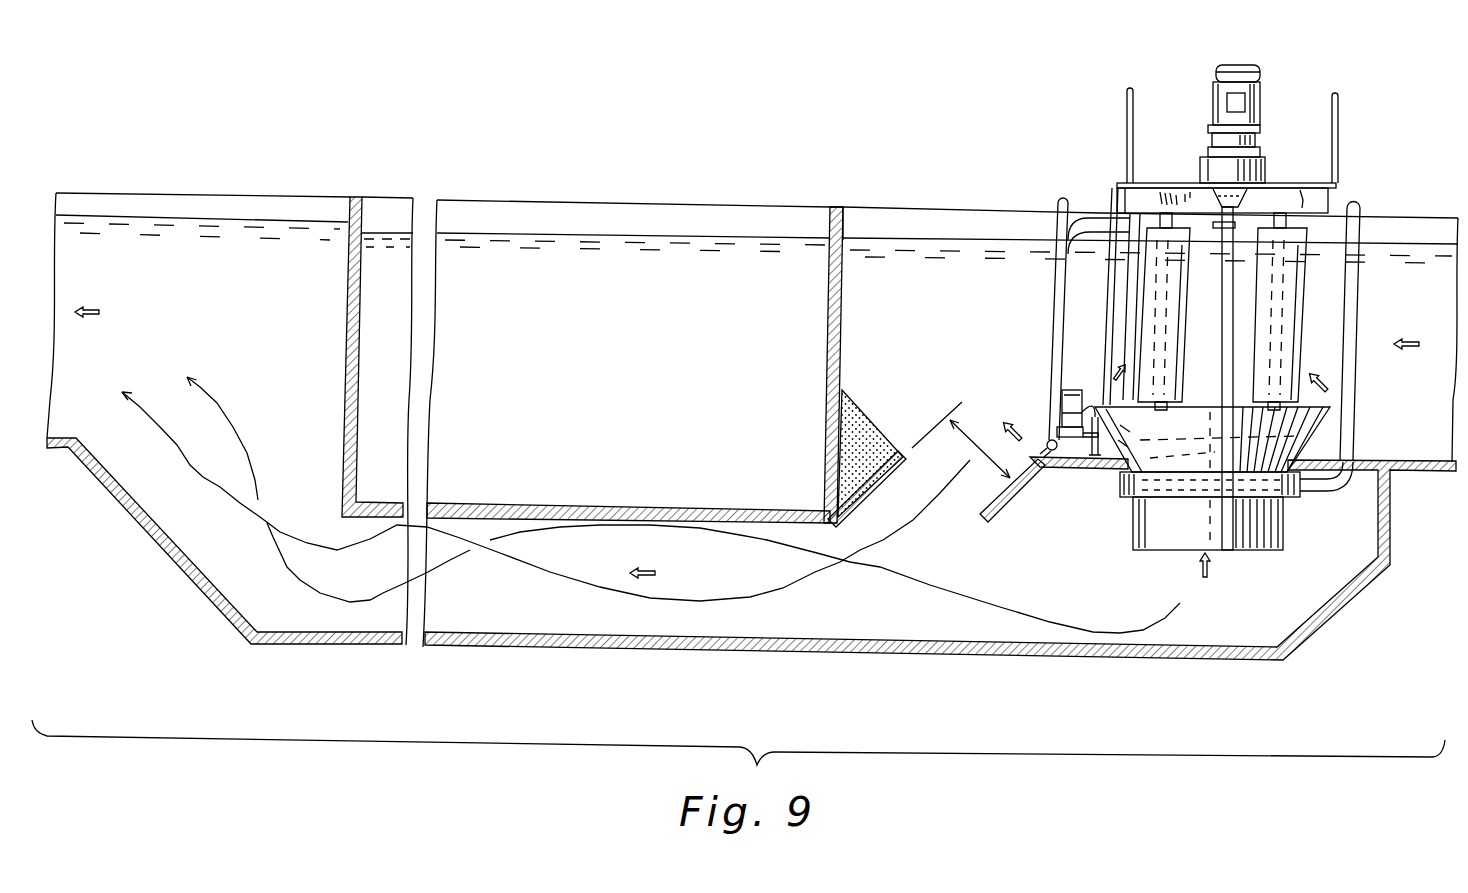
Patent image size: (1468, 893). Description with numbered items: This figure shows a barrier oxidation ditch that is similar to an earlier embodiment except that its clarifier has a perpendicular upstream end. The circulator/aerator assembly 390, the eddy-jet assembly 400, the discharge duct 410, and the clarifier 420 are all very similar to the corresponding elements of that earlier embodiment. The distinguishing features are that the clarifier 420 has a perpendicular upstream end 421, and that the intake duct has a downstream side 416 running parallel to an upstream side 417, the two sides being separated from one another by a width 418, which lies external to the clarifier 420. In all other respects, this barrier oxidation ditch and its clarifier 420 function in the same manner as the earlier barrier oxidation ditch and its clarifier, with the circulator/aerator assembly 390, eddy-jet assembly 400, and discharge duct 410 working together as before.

The circulator/aerator assembly 390 is at (1270, 80).
The eddy-jet assembly 400 is at (1058, 393).
The discharge duct 410 is at (1115, 662).
The downstream side 416 is at (880, 470).
The upstream side 417 is at (1025, 480).
The width 418 is at (975, 440).
The clarifier 420 is at (817, 192).
The perpendicular upstream end 421 is at (830, 222).